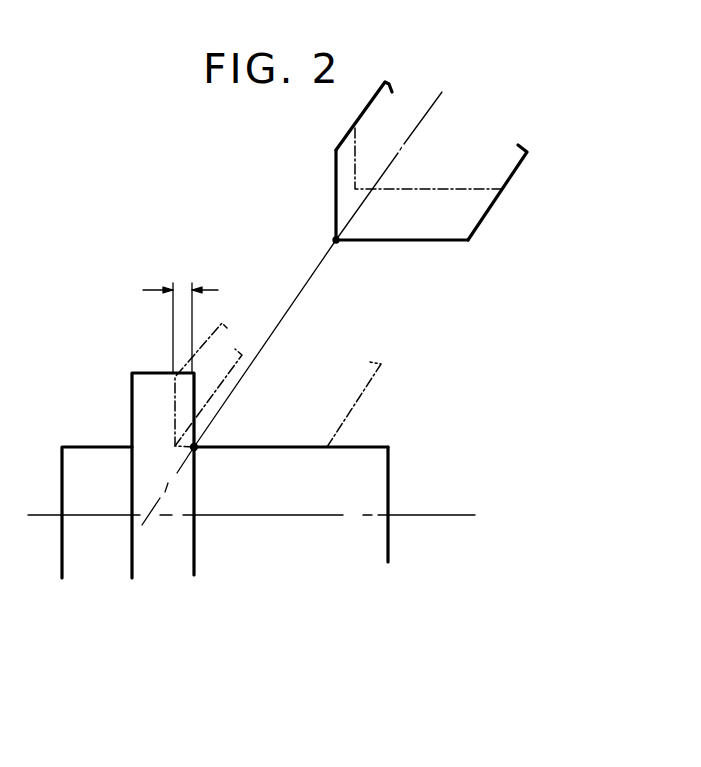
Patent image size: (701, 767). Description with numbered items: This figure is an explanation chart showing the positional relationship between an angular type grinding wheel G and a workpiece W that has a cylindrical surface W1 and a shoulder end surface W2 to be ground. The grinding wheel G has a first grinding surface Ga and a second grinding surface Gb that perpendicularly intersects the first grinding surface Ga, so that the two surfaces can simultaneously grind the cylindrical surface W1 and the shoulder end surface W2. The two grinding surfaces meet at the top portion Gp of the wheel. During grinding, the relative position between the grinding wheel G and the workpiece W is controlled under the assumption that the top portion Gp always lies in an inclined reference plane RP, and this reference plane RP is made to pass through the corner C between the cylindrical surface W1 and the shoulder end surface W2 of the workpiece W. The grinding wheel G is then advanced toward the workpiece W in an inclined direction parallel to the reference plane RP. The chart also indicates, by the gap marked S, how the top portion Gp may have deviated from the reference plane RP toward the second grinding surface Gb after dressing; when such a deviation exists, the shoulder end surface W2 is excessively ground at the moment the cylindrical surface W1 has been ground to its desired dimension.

The reference plane RP is at (440, 101).
The angular type grinding wheel G is at (422, 183).
The first grinding surface Ga is at (452, 242).
The second grinding surface Gb is at (336, 172).
The top portion Gp is at (337, 243).
The workpiece W is at (268, 498).
The cylindrical surface W1 is at (372, 447).
The shoulder end surface W2 is at (196, 557).
The corner C is at (197, 450).
The deviation amount S is at (183, 290).